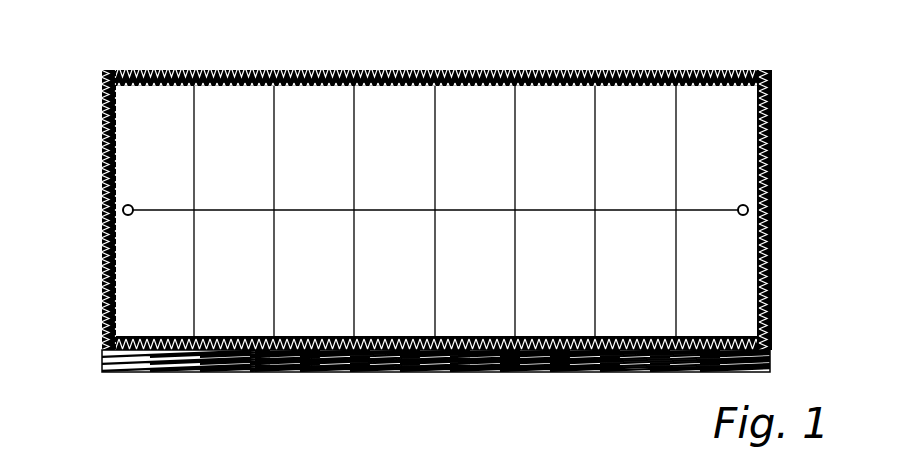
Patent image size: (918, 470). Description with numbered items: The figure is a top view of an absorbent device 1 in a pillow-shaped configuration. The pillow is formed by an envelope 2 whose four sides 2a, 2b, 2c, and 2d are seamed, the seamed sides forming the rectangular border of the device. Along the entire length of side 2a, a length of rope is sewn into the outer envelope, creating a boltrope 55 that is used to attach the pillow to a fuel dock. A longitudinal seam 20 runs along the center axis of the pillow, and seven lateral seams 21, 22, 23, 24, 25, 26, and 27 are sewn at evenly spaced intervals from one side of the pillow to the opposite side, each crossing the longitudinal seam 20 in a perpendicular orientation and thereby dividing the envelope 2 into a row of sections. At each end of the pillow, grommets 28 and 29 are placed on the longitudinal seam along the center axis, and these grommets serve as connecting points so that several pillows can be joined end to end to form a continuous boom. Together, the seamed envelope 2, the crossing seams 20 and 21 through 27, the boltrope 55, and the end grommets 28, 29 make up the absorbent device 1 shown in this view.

The absorbent device 1 is at (458, 188).
The envelope 2 is at (434, 209).
The side 2a is at (633, 348).
The side 2b is at (100, 283).
The side 2c is at (215, 70).
The side 2d is at (778, 113).
The longitudinal seam 20 is at (634, 208).
The lateral seam 21 is at (195, 246).
The lateral seam 22 is at (275, 246).
The lateral seam 23 is at (355, 246).
The lateral seam 24 is at (436, 246).
The lateral seam 25 is at (516, 246).
The lateral seam 26 is at (596, 246).
The lateral seam 27 is at (677, 246).
The grommet 28 is at (129, 204).
The grommet 29 is at (742, 204).
The boltrope 55 is at (401, 363).